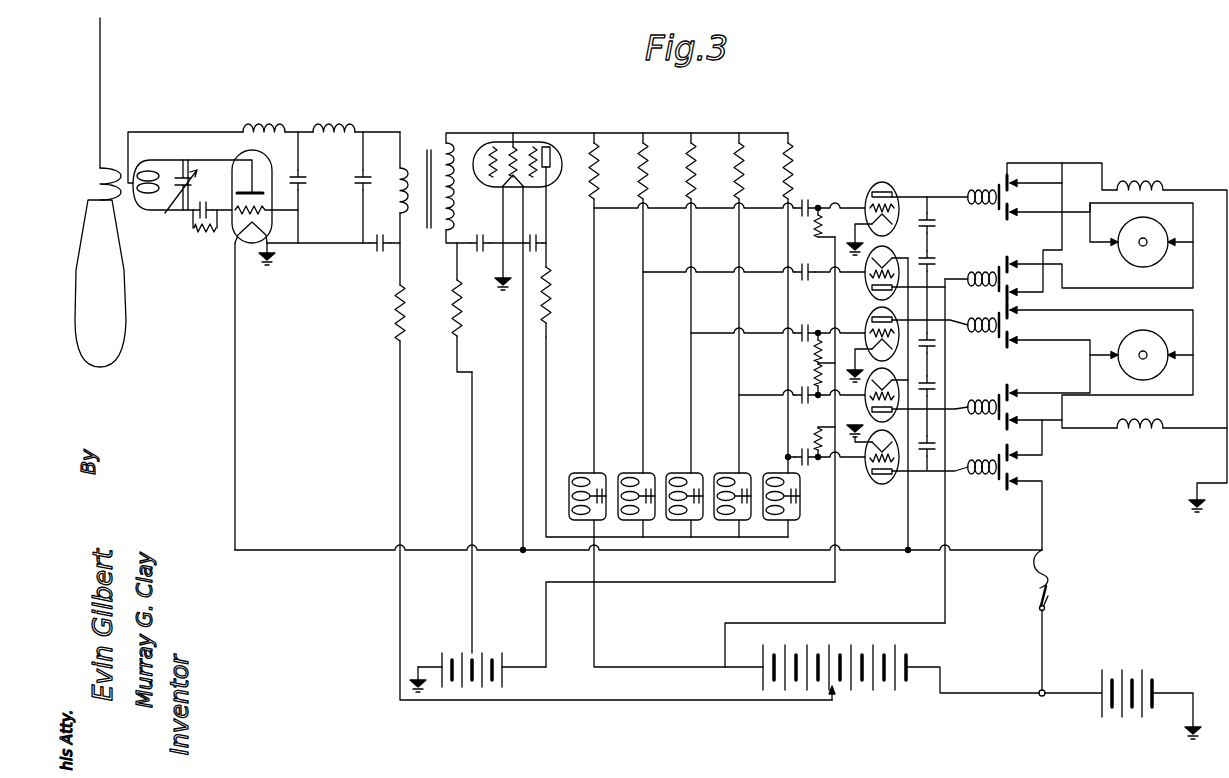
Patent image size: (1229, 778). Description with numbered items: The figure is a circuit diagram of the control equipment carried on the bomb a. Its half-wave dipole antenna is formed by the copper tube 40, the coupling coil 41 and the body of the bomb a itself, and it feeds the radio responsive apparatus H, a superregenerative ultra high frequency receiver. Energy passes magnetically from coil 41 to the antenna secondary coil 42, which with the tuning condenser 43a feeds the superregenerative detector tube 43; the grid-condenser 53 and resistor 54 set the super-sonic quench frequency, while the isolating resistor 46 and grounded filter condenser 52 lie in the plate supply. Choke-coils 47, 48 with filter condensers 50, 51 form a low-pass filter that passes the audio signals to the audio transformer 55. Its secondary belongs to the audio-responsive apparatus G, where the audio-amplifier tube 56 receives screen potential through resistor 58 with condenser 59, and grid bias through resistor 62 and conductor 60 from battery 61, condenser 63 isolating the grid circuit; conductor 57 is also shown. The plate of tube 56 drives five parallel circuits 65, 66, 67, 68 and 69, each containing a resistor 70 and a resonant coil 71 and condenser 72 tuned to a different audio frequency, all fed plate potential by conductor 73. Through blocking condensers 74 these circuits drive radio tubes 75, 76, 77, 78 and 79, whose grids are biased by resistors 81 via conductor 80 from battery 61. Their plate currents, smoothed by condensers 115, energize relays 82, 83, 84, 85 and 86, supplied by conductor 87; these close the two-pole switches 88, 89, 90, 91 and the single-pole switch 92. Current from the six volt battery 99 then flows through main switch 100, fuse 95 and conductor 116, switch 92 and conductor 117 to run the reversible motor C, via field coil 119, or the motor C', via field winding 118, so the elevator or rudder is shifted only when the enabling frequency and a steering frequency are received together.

The copper tube 40 is at (100, 80).
The coupling coil 41 is at (95, 183).
The bomb a is at (126, 265).
The antenna secondary coil 42 is at (152, 170).
The superregenerative detector tube 43 is at (299, 210).
The tuning condenser 43a is at (172, 198).
The isolating resistor 46 is at (397, 325).
The choke-coil 47 is at (264, 116).
The choke-coil 48 is at (334, 115).
The filter condenser 50 is at (307, 187).
The filter condenser 51 is at (374, 187).
The grounded filter condenser 52 is at (378, 252).
The grid-condenser 53 is at (201, 222).
The resistor 54 is at (215, 240).
The audio transformer 55 is at (429, 152).
The audio-amplifier tube 56 is at (530, 143).
The conductor 57 is at (547, 375).
The resistor 58 is at (552, 300).
The condenser 59 is at (541, 241).
The conductor 60 is at (472, 442).
The battery 61 is at (492, 652).
The resistor 62 is at (463, 312).
The condenser 63 is at (478, 252).
The parallel circuit 65 is at (594, 257).
The parallel circuit 66 is at (643, 257).
The parallel circuit 67 is at (691, 257).
The parallel circuit 68 is at (739, 257).
The parallel circuit 69 is at (788, 297).
The resistor 70 is at (800, 172).
The coil 71 is at (677, 473).
The condenser 72 is at (704, 488).
The conductor 73 is at (672, 667).
The condenser 74 is at (809, 467).
The radio tube 75 is at (893, 186).
The radio tube 76 is at (868, 290).
The radio tube 77 is at (868, 347).
The radio tube 78 is at (868, 405).
The radio tube 79 is at (868, 479).
The conductor 80 is at (680, 583).
The resistor 81 is at (815, 435).
The relay 82 is at (980, 190).
The relay 83 is at (983, 266).
The relay 84 is at (980, 333).
The relay 85 is at (983, 397).
The relay 86 is at (983, 457).
The conductor 87 is at (945, 523).
The two-pole switch 88 is at (1100, 225).
The two-pole switch 89 is at (1036, 229).
The two-pole switch 90 is at (1101, 364).
The two-pole switch 91 is at (1021, 407).
The single-pole switch 92 is at (1020, 472).
The fuse 95 is at (912, 630).
The battery 99 is at (1116, 668).
The main battery switch 100 is at (1050, 603).
The condenser 115 is at (936, 446).
The conductor 116 is at (1042, 498).
The conductor 117 is at (1042, 447).
The field winding 118 is at (1140, 440).
The field coil 119 is at (1145, 180).
The reversible electric motor C is at (1141, 245).
The reversible electric motor C' is at (1141, 361).
The audio-responsive apparatus G is at (528, 139).
The radio responsive apparatus H is at (321, 158).